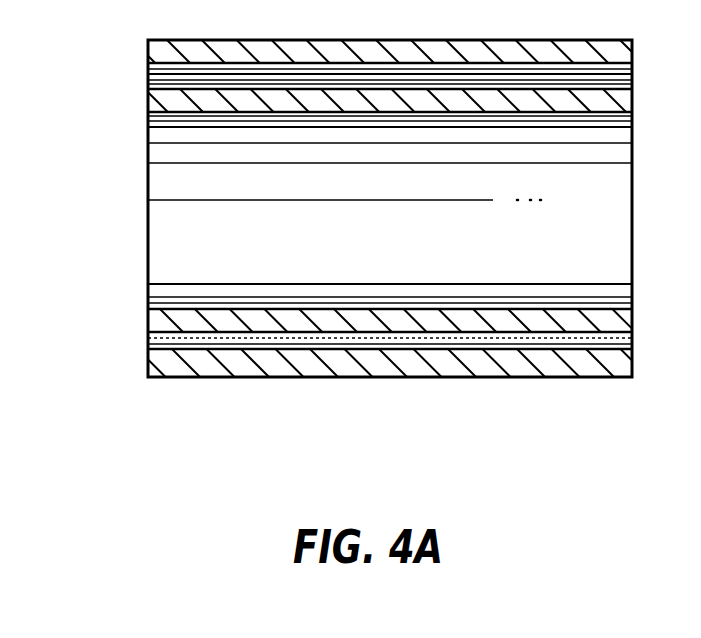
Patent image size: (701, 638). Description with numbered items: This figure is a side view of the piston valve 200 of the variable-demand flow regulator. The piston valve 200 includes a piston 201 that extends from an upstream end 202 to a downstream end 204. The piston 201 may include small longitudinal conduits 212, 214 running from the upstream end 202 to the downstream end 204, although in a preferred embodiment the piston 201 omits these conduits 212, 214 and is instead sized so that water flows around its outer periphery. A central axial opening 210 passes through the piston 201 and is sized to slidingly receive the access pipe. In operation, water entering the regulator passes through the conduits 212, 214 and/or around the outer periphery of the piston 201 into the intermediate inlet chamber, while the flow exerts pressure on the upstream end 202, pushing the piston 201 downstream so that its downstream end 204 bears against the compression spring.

The piston valve 200 is at (180, 433).
The piston 201 is at (623, 43).
The upstream end 202 is at (150, 57).
The downstream end 204 is at (632, 365).
The central axial opening 210 is at (162, 253).
The longitudinal conduit 212 is at (617, 78).
The longitudinal conduit 214 is at (613, 340).